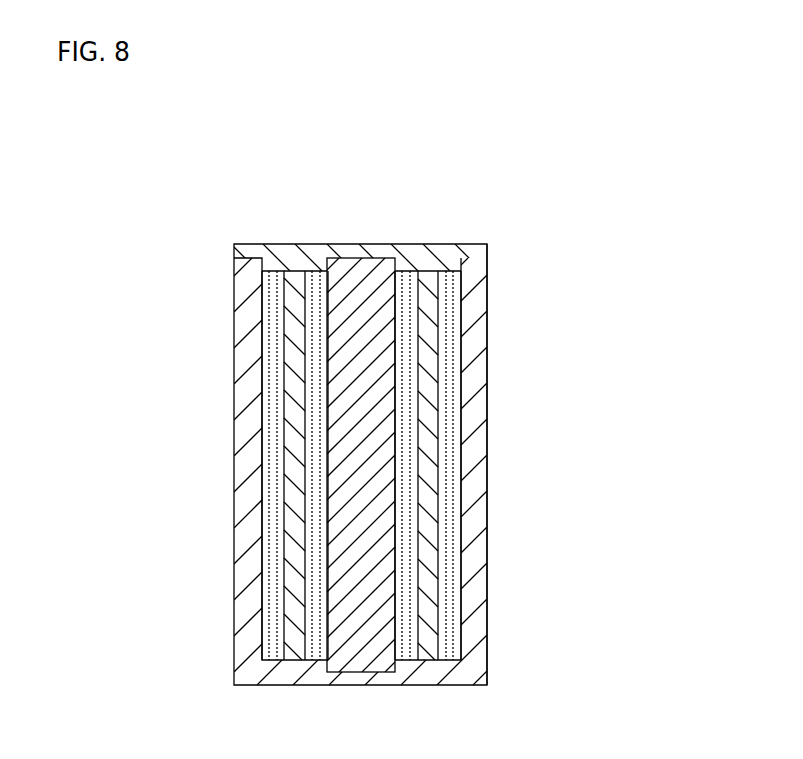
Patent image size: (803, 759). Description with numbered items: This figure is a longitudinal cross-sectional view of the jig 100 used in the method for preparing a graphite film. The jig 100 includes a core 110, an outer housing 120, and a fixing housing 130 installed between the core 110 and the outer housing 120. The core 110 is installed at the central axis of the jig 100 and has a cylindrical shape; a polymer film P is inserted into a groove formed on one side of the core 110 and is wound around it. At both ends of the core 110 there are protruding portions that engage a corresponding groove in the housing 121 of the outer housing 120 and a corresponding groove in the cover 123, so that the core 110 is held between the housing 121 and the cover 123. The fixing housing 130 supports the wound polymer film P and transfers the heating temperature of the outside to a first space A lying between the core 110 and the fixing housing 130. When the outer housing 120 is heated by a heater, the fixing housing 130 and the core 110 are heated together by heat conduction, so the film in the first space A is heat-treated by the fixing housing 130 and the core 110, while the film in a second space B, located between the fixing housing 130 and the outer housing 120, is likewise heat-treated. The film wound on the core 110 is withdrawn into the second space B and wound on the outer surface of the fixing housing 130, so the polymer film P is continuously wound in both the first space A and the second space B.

The jig 100 is at (182, 180).
The core 110 is at (362, 267).
The outer housing 120 is at (617, 183).
The housing 121 is at (480, 268).
The cover 123 is at (435, 252).
The fixing housing 130 is at (480, 343).
The polymer film P is at (262, 322).
The first space A is at (323, 433).
The second space B is at (276, 496).